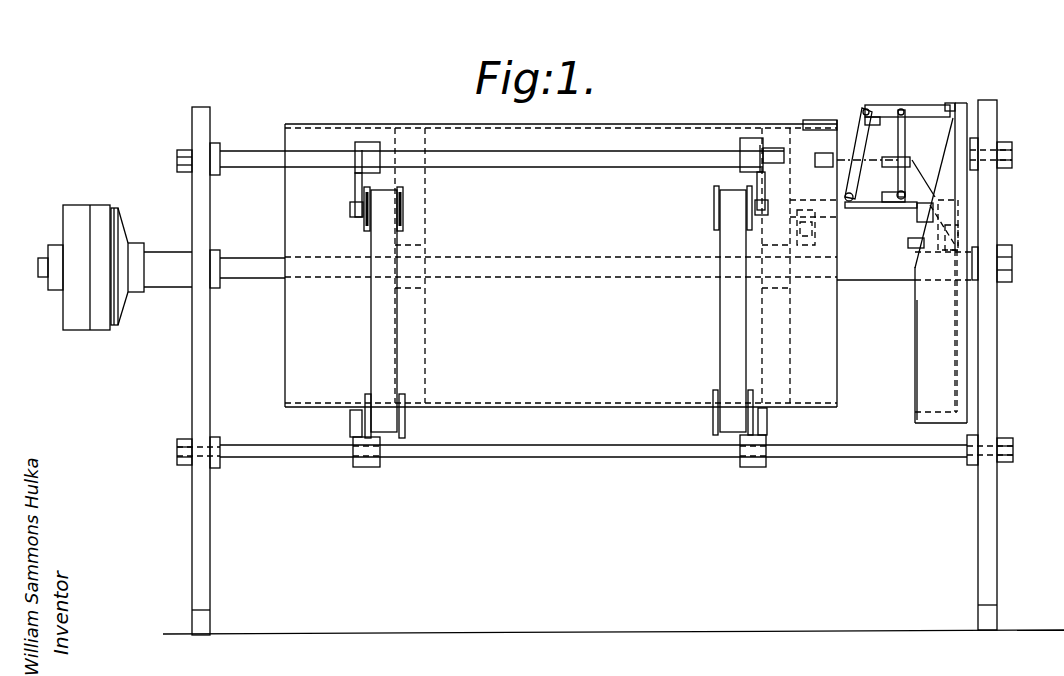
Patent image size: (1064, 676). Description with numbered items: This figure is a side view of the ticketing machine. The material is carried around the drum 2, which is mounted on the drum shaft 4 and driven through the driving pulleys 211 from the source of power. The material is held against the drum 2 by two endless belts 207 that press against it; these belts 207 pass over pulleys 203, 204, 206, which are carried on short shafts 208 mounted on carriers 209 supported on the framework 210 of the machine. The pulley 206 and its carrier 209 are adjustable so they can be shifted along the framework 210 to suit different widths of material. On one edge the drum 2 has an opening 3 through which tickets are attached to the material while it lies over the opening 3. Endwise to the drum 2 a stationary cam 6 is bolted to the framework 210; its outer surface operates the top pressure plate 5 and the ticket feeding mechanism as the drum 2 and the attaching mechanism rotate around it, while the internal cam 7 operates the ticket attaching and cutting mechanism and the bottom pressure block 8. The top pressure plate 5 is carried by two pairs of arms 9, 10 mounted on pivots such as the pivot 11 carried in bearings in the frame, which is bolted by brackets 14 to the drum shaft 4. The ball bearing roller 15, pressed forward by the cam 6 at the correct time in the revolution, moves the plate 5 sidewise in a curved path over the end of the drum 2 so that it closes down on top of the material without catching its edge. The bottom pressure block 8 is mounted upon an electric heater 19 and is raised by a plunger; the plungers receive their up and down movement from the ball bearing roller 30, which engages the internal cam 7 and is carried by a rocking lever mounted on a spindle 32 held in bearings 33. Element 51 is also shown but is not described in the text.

The drum 2 is at (646, 125).
The opening 3 is at (815, 120).
The drum shaft 4 is at (241, 275).
The top pressure plate 5 is at (862, 112).
The stationary cam 6 is at (985, 106).
The internal cam 7 is at (960, 326).
The bottom pressure block 8 is at (845, 120).
The arms 9 is at (870, 138).
The arms 10 is at (905, 140).
The pivot 11 is at (853, 210).
The brackets 14 is at (810, 245).
The ball bearing roller 15 is at (958, 104).
The electric heater 19 is at (818, 153).
The ball bearing roller 30 is at (960, 240).
The spindle 32 is at (875, 210).
The bearings 33 is at (800, 220).
The support 51 is at (915, 348).
The pulley 203 is at (403, 208).
The pulley 204 is at (405, 428).
The pulley 206 is at (718, 208).
The endless belts 207 is at (371, 362).
The short shafts 208 is at (767, 418).
The carriers 209 is at (370, 150).
The framework 210 is at (576, 158).
The driving pulleys 211 is at (100, 215).